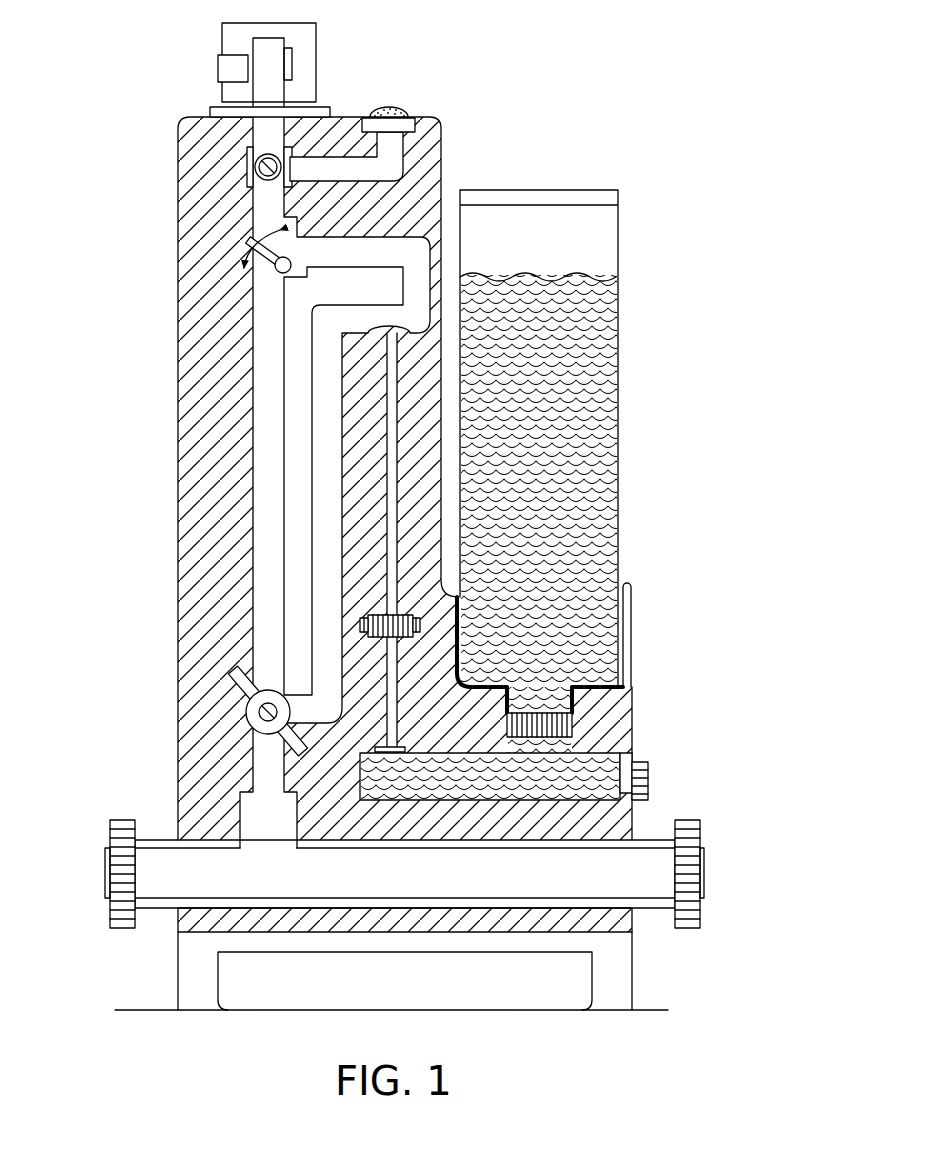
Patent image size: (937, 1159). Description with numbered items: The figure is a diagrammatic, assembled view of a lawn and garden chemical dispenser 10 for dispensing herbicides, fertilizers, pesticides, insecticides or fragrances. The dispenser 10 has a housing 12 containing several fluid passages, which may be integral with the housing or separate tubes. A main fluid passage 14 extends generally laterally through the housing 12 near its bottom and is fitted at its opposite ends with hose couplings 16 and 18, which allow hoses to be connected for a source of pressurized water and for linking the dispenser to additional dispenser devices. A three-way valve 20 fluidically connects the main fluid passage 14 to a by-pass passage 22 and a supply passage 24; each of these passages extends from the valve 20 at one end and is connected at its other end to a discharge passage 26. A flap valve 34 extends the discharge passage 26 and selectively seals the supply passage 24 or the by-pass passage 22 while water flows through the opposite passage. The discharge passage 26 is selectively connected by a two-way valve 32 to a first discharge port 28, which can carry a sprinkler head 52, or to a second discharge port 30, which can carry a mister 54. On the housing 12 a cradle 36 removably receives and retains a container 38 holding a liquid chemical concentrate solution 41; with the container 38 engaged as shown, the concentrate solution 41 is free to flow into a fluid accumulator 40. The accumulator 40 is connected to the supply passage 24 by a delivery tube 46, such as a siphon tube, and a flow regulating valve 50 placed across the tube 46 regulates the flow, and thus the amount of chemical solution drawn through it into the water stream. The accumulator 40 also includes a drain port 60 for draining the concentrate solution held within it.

The lawn and garden chemical dispenser 10 is at (543, 138).
The housing 12 is at (178, 480).
The main fluid passage 14 is at (458, 878).
The hose coupling 16 is at (122, 820).
The hose coupling 18 is at (695, 822).
The three-way valve 20 is at (256, 717).
The by-pass passage 22 is at (265, 568).
The supply passage 24 is at (328, 613).
The discharge passage 26 is at (265, 205).
The first discharge port 28 is at (275, 103).
The second discharge port 30 is at (392, 148).
The two-way valve 32 is at (255, 167).
The flap valve 34 is at (273, 260).
The cradle 36 is at (631, 650).
The container 38 is at (618, 452).
The fluid accumulator 40 is at (603, 757).
The liquid chemical concentrate solution 41 is at (587, 352).
The delivery tube 46 is at (393, 408).
The flow regulating valve 50 is at (420, 628).
The sprinkler head 52 is at (222, 40).
The mister 54 is at (392, 106).
The drain port 60 is at (648, 780).